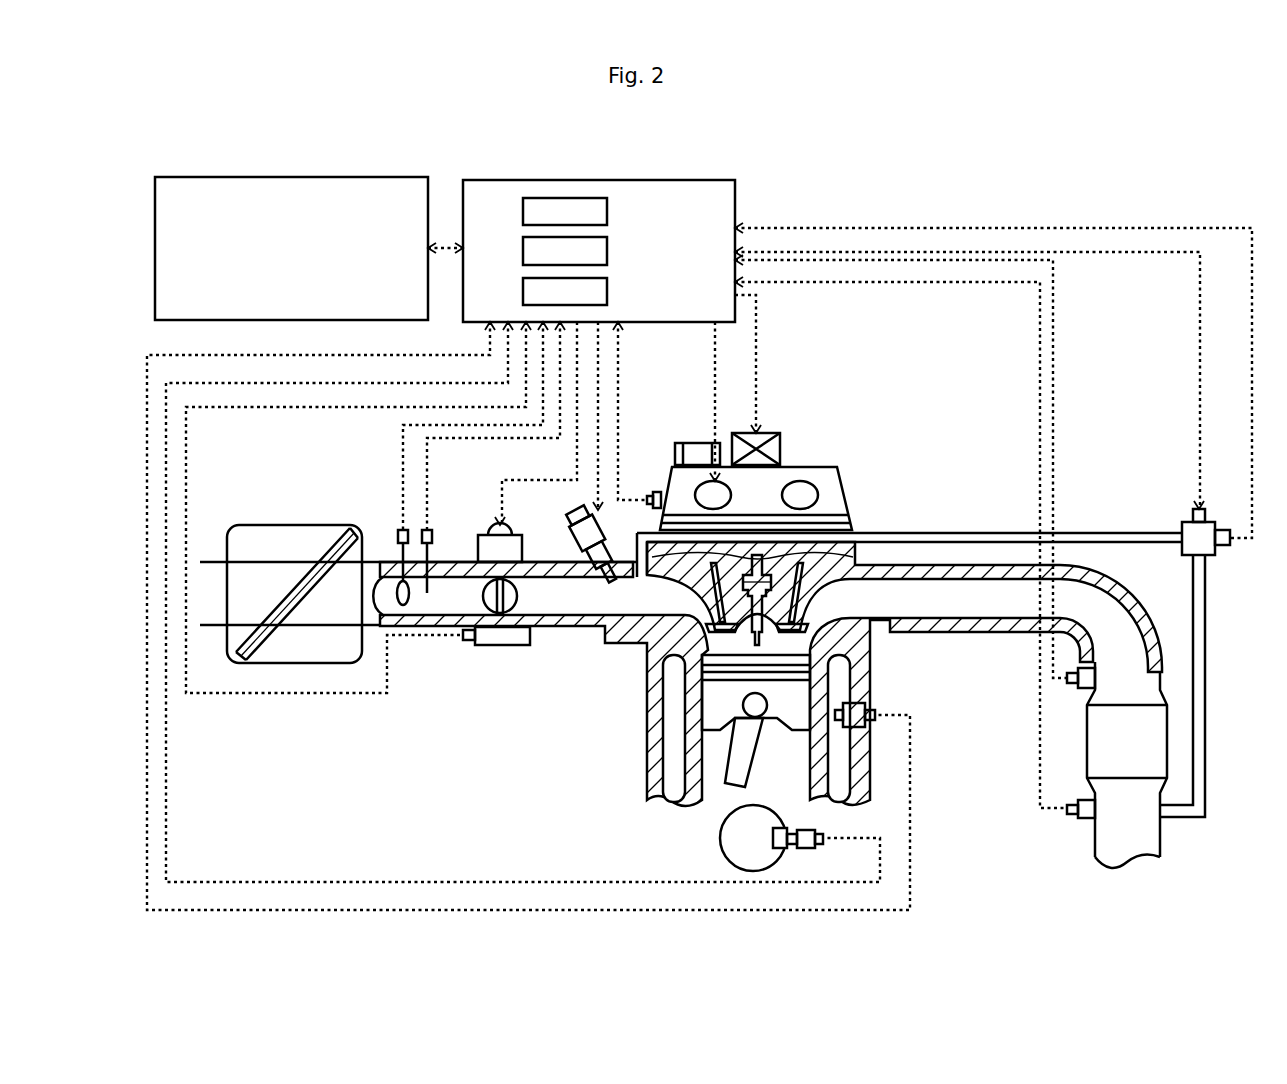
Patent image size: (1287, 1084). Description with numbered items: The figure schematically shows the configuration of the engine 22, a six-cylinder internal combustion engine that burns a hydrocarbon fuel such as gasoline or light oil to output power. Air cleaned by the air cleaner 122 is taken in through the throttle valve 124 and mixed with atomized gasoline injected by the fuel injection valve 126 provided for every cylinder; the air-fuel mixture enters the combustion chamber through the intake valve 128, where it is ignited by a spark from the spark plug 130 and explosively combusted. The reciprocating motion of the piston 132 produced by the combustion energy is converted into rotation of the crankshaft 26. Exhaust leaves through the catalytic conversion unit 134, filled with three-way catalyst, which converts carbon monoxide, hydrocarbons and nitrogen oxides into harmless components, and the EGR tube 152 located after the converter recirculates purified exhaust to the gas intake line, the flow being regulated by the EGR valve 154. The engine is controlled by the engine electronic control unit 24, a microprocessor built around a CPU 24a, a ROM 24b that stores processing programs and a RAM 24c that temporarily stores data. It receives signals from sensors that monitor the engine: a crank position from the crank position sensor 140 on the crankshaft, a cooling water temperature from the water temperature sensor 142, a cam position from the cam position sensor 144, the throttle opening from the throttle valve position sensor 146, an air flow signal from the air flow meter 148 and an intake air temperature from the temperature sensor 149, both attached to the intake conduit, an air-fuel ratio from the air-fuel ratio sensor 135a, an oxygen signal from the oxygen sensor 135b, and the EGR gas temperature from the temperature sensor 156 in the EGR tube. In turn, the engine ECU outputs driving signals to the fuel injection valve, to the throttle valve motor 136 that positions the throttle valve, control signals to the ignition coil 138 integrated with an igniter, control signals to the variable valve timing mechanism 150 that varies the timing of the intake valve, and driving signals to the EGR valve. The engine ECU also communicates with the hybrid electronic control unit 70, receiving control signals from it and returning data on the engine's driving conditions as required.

The engine 22 is at (803, 410).
The engine electronic control unit 24 is at (600, 180).
The CPU 24a is at (607, 212).
The ROM 24b is at (607, 251).
The RAM 24c is at (607, 292).
The crankshaft 26 is at (721, 838).
The hybrid electronic control unit 70 is at (292, 177).
The air cleaner 122 is at (292, 525).
The throttle valve 124 is at (532, 560).
The fuel injection valve 126 is at (572, 566).
The intake valve 128 is at (720, 622).
The spark plug 130 is at (793, 623).
The piston 132 is at (718, 703).
The catalytic conversion unit 134 is at (1097, 727).
The air-fuel ratio sensor 135a is at (1085, 690).
The oxygen sensor 135b is at (1085, 822).
The throttle valve motor 136 is at (483, 530).
The ignition coil 138 is at (782, 452).
The crank position sensor 140 is at (812, 850).
The water temperature sensor 142 is at (870, 705).
The cam position sensor 144 is at (653, 492).
The throttle valve position sensor 146 is at (500, 647).
The air flow meter 148 is at (398, 530).
The temperature sensor 149 is at (433, 527).
The variable valve timing mechanism 150 is at (848, 505).
The EGR tube 152 is at (1205, 676).
The EGR valve 154 is at (1190, 512).
The temperature sensor 156 is at (1228, 548).